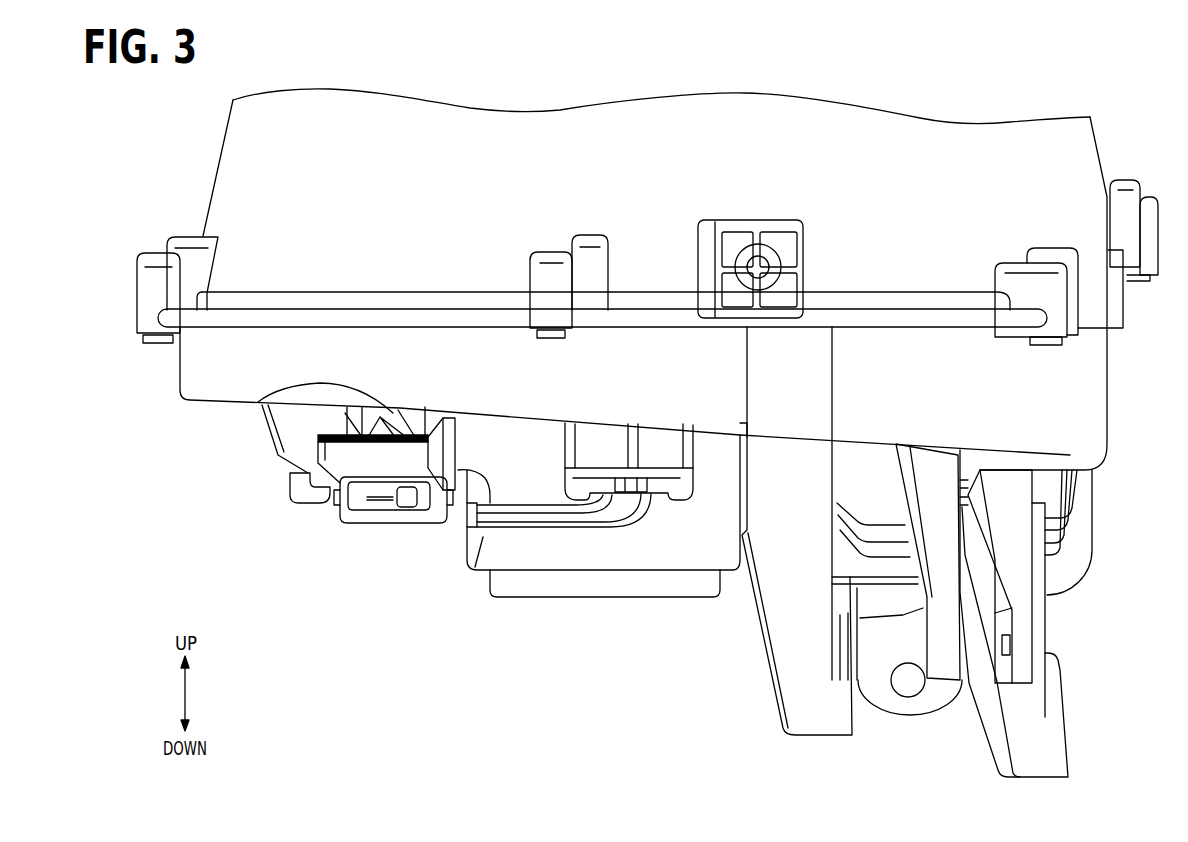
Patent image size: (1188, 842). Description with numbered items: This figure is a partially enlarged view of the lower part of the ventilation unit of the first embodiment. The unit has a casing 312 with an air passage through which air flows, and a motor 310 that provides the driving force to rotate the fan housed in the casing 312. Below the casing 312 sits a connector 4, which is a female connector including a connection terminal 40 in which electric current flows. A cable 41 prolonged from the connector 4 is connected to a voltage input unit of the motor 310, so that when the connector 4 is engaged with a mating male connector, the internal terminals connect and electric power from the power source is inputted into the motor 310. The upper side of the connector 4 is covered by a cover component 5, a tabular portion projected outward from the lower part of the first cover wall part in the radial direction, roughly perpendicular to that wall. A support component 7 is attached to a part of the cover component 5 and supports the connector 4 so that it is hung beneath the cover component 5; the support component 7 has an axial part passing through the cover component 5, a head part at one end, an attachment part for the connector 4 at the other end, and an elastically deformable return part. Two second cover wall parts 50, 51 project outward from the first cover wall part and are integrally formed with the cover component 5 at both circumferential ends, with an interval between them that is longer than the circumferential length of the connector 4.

The casing 312 is at (1063, 398).
The motor 310 is at (670, 547).
The cable 41 is at (547, 530).
The second cover wall part 50 is at (490, 523).
The cover component 5 is at (313, 420).
The second cover wall part 51 is at (283, 457).
The connector 4 is at (437, 517).
The connection terminal 40 is at (380, 500).
The support component 7 is at (260, 400).